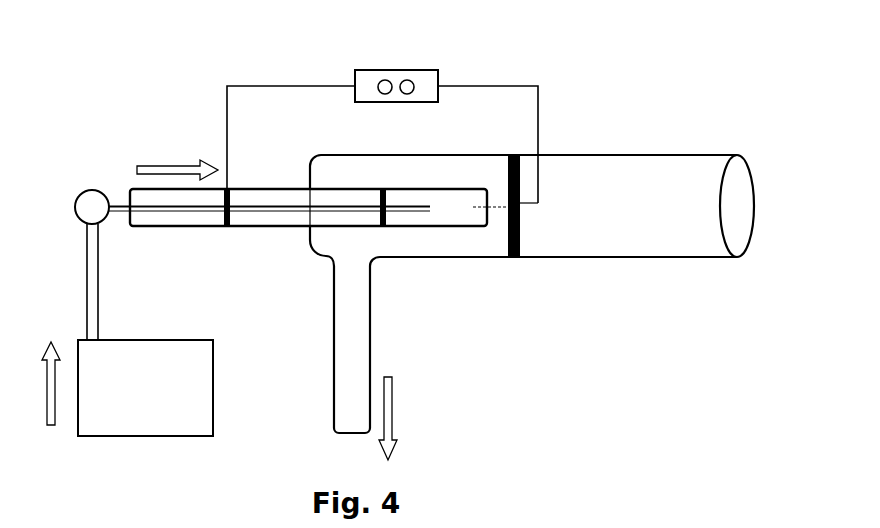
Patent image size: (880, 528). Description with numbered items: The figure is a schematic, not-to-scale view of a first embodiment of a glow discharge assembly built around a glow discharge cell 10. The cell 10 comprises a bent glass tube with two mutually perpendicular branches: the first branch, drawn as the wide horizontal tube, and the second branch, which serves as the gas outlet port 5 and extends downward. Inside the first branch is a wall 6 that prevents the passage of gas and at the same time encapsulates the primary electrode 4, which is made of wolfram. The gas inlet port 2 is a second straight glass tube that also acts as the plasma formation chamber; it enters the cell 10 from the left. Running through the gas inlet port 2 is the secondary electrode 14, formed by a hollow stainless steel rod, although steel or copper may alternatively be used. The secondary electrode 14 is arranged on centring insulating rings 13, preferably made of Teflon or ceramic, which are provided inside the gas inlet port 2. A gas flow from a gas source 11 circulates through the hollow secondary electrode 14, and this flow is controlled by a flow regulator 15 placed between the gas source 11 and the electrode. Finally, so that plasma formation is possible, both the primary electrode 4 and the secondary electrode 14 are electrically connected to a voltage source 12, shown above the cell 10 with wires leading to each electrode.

The gas inlet port 2 is at (148, 226).
The primary electrode 4 is at (521, 208).
The gas outlet port 5 is at (353, 353).
The wall 6 is at (520, 240).
The glow discharge cell 10 is at (593, 156).
The gas source 11 is at (132, 383).
The voltage source 12 is at (402, 72).
The centring insulating rings 13 is at (223, 225).
The secondary electrode 14 is at (298, 208).
The flow regulator 15 is at (93, 195).